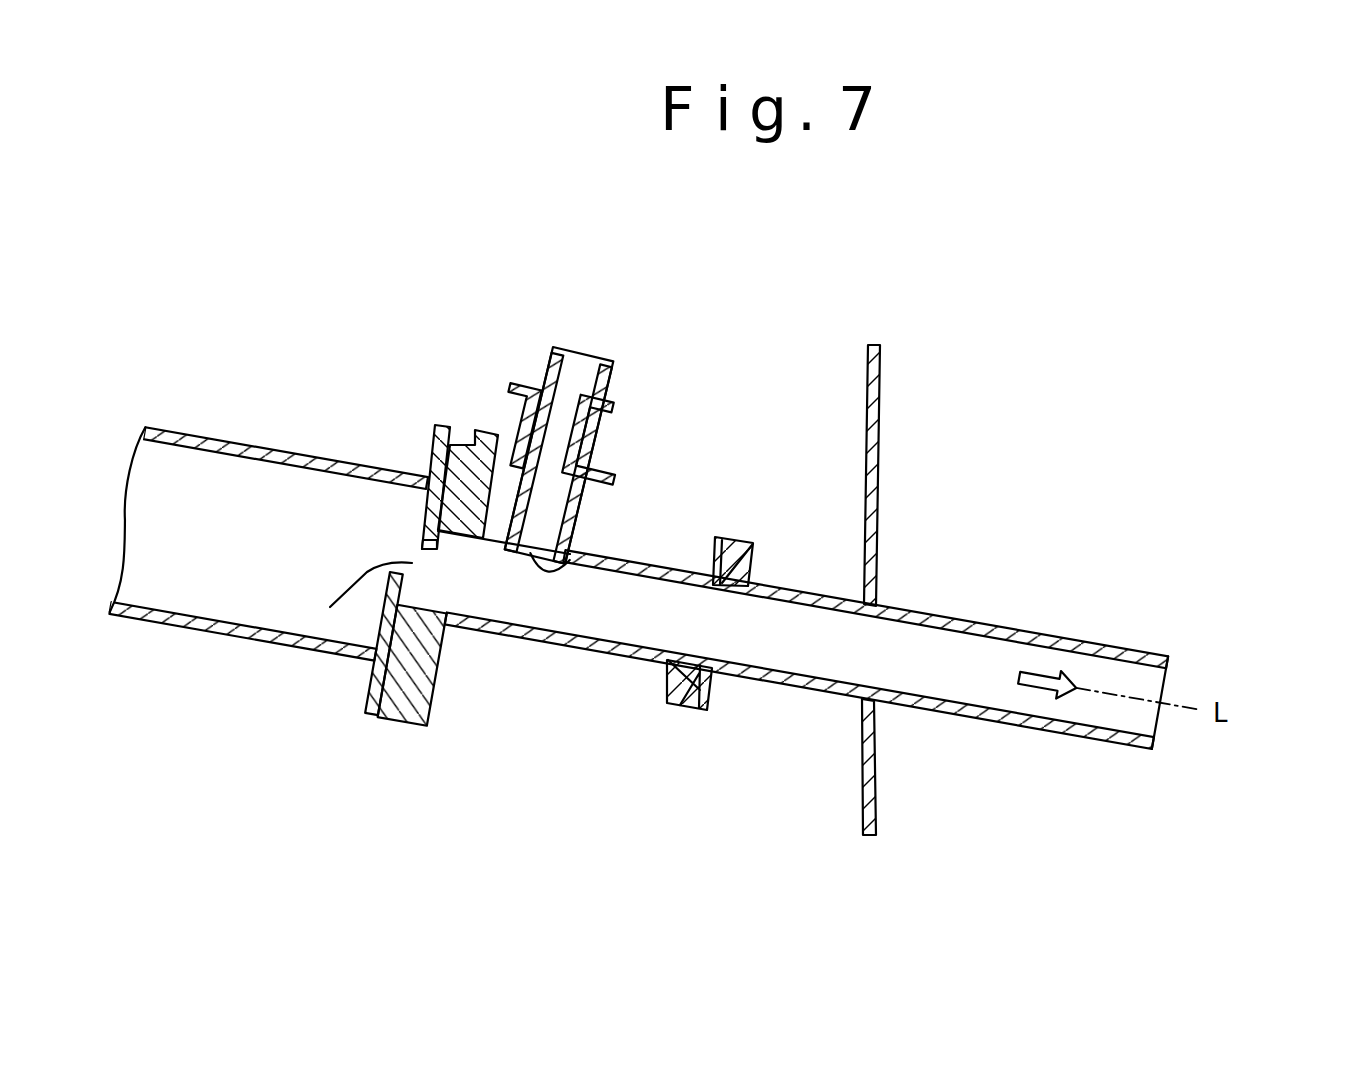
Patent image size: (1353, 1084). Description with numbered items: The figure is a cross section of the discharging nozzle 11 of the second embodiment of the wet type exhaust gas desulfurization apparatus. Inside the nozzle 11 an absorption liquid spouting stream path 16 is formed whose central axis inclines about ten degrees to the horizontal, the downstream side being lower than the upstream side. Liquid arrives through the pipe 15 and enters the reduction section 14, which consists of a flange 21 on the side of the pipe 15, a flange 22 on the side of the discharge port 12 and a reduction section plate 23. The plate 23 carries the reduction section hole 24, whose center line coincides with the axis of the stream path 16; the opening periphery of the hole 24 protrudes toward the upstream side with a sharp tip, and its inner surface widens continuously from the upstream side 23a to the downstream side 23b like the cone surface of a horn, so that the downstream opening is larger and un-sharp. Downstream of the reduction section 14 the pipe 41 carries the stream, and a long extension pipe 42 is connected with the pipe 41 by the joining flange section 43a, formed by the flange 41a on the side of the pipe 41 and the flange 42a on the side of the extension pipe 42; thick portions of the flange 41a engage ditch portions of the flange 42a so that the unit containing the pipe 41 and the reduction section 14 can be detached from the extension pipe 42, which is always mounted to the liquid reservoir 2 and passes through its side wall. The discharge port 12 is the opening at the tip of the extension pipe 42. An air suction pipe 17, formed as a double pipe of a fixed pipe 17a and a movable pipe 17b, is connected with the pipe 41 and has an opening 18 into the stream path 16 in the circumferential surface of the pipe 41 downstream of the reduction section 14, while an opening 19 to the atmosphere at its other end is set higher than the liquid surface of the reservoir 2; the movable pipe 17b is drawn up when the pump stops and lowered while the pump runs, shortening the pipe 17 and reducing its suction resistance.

The liquid reservoir 2 is at (880, 405).
The nozzle 11 is at (806, 696).
The discharge port 12 is at (1165, 687).
The reduction section 14 is at (490, 673).
The pipe 15 is at (200, 436).
The absorption liquid spouting stream path 16 is at (1030, 677).
The air suction pipe 17 is at (599, 379).
The fixed pipe 17a is at (522, 384).
The movable pipe 17b is at (614, 376).
The opening 18 is at (563, 558).
The opening to the atmosphere 19 is at (583, 346).
The flange 21 is at (432, 440).
The flange 22 is at (410, 723).
The reduction section plate 23 is at (478, 430).
The upstream side 23a is at (432, 553).
The downstream side 23b is at (442, 537).
The reduction section hole 24 is at (330, 607).
The pipe 41 is at (714, 553).
The flange 41a is at (679, 708).
The extension pipe 42 is at (920, 612).
The flange 42a is at (740, 540).
The joining flange section 43a is at (743, 764).